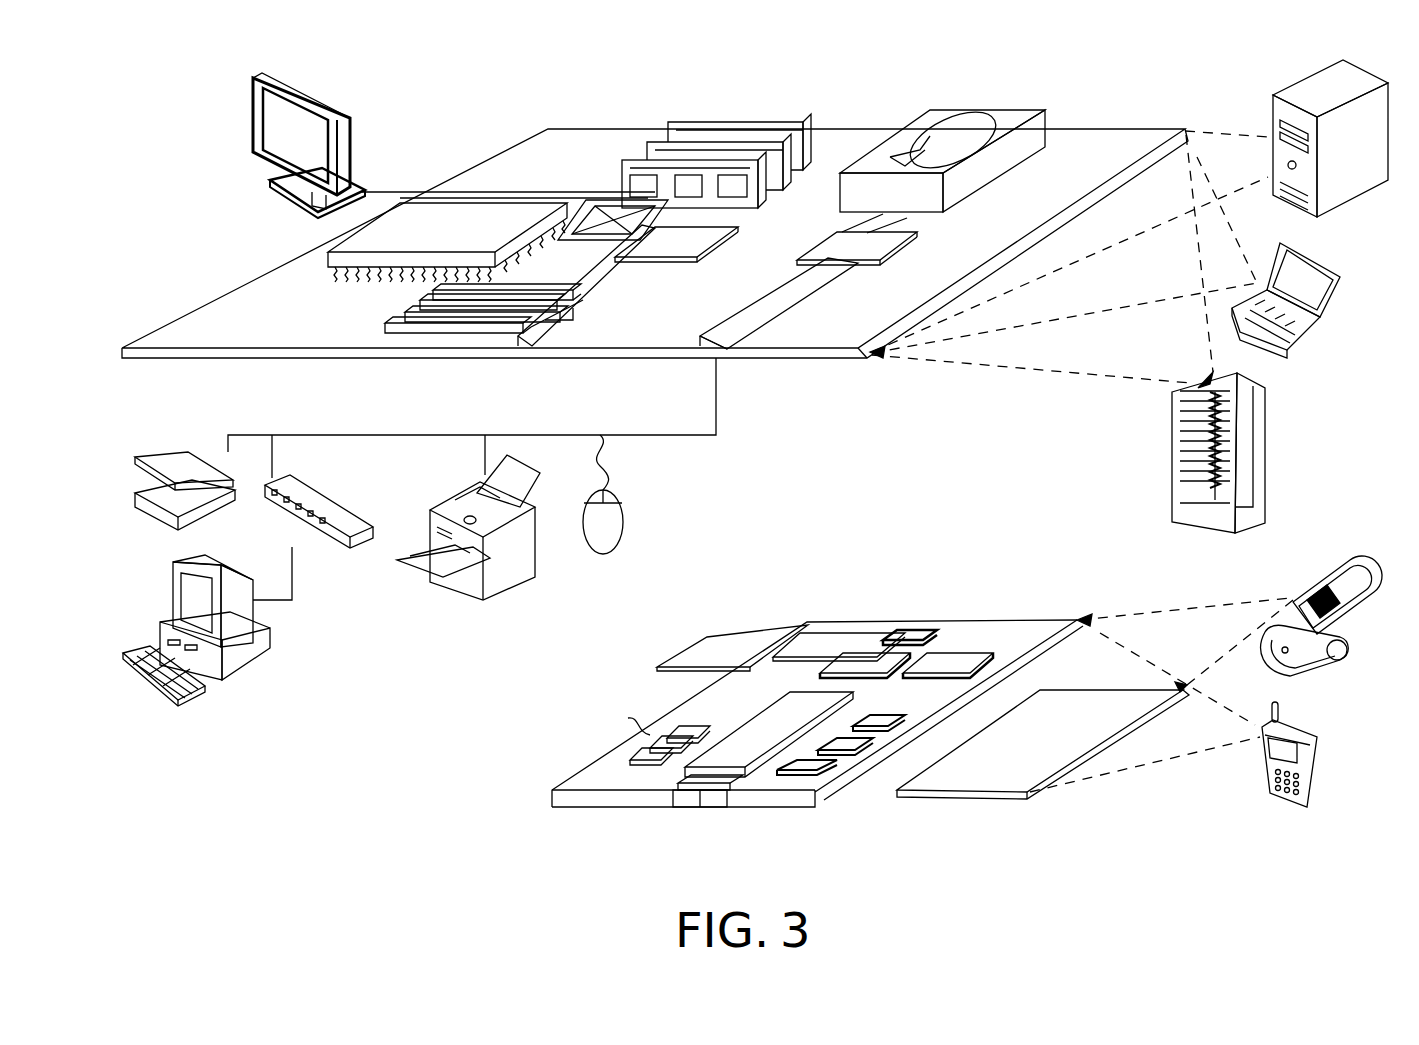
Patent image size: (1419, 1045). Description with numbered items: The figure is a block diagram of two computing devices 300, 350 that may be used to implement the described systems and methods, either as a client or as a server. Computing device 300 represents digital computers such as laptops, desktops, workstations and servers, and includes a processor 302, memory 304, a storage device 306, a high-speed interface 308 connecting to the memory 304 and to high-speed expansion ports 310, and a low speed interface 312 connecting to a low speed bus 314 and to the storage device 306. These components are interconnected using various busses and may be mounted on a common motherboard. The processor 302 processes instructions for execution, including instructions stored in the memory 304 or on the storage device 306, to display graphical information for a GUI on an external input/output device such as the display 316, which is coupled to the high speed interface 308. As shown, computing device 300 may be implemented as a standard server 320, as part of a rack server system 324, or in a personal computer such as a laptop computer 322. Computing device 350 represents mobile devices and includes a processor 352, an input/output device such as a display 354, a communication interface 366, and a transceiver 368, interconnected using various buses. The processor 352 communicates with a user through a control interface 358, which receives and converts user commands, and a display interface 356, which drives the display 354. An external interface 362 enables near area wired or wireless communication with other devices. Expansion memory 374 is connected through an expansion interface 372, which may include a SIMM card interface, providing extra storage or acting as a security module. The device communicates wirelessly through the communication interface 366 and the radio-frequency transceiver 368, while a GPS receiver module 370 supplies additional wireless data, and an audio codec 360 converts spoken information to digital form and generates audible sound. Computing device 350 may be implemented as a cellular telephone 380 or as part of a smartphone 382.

The computing device 300 is at (460, 88).
The processor 302 is at (300, 260).
The memory 304 is at (690, 125).
The storage device 306 is at (935, 115).
The high-speed interface 308 is at (584, 195).
The high-speed expansion ports 310 is at (480, 316).
The low speed interface 312 is at (830, 242).
The low speed bus 314 is at (736, 351).
The display 316 is at (262, 76).
The standard server 320 is at (1275, 112).
The laptop computer 322 is at (1335, 262).
The rack server system 324 is at (1173, 484).
The computing device 350 is at (512, 822).
The processor 352 is at (740, 772).
The display 354 is at (1030, 792).
The display interface 356 is at (818, 775).
The control interface 358 is at (858, 756).
The audio codec 360 is at (878, 731).
The external interface 362 is at (703, 807).
The communication interface 366 is at (866, 657).
The transceiver 368 is at (948, 663).
The GPS receiver module 370 is at (913, 628).
The expansion interface 372 is at (790, 632).
The expansion memory 374 is at (715, 630).
The cellular telephone 380 is at (1318, 572).
The smartphone 382 is at (1262, 765).